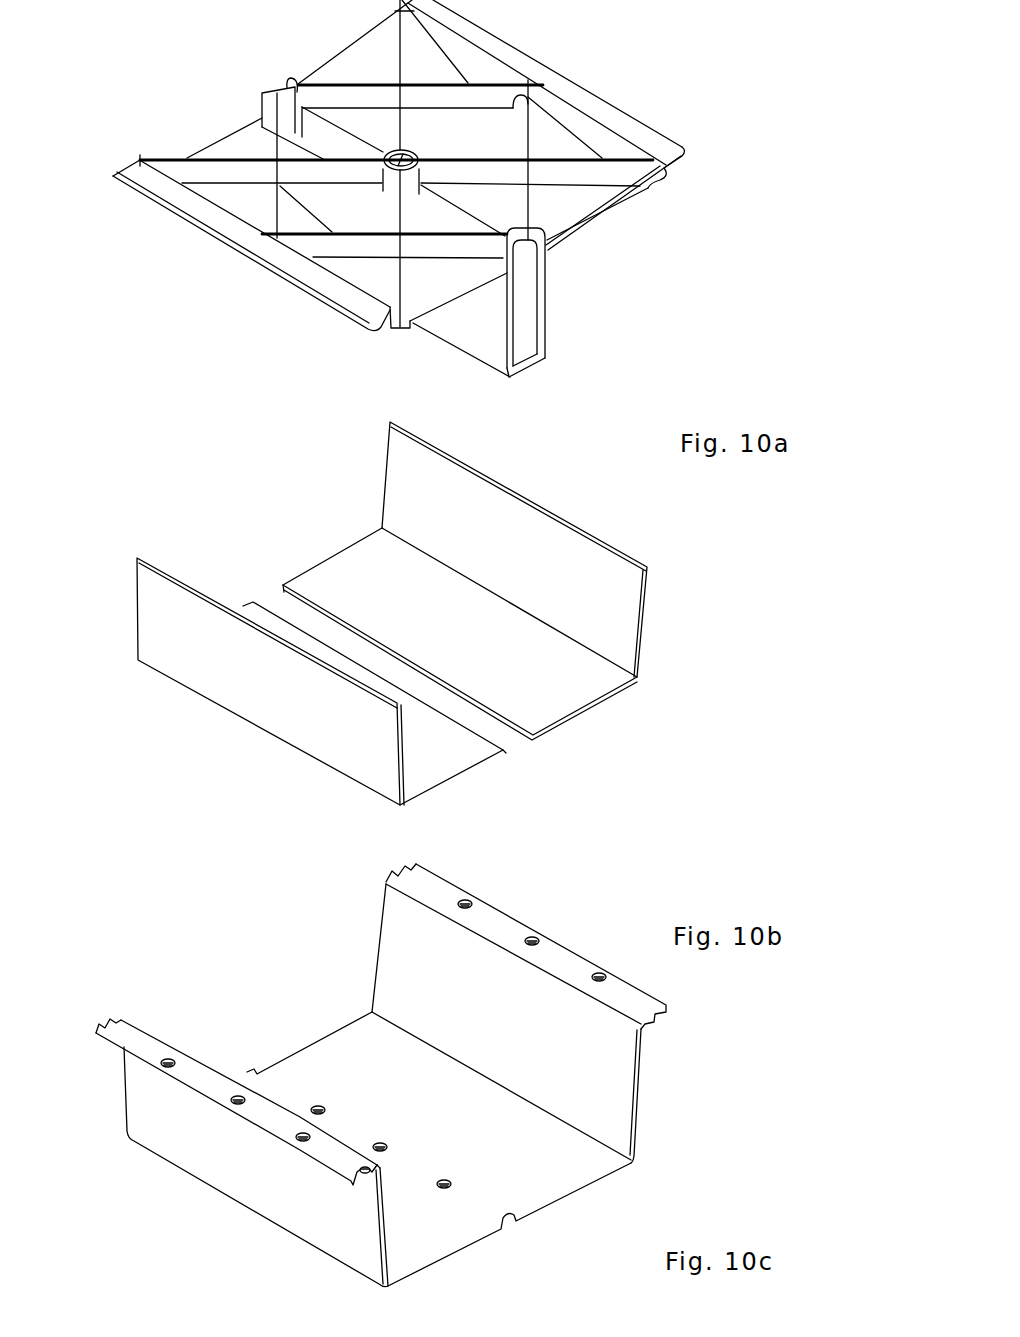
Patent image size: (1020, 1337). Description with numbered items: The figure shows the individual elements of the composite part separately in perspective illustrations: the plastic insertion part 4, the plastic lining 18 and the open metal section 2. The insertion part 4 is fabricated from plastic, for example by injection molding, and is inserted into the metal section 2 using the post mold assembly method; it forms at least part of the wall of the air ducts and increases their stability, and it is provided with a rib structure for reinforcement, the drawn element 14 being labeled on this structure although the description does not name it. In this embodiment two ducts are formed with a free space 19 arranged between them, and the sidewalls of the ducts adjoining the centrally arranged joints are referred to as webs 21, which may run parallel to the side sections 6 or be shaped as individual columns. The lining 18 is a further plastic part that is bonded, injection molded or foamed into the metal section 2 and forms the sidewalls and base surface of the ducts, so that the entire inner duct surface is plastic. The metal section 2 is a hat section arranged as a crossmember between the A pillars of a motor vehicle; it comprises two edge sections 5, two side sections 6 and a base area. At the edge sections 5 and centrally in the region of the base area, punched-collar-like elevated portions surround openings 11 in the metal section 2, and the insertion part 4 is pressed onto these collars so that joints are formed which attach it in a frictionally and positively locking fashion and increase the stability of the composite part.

In FIG. 10C, the metal section 2 is at (642, 1060).
In FIG. 10A, the insertion part 4 is at (681, 72).
In FIG. 10A, the edge sections 5 is at (644, 129).
In FIG. 10C, the edge sections 5 is at (133, 1040).
In FIG. 10C, the side sections 6 is at (550, 1023).
In FIG. 10C, the opening 11 is at (166, 1054).
In FIG. 10A, the strut rod 14 is at (312, 84).
In FIG. 10B, the lining 18 is at (160, 567).
In FIG. 10A, the free space 19 is at (417, 150).
In FIG. 10A, the webs 21 is at (547, 297).